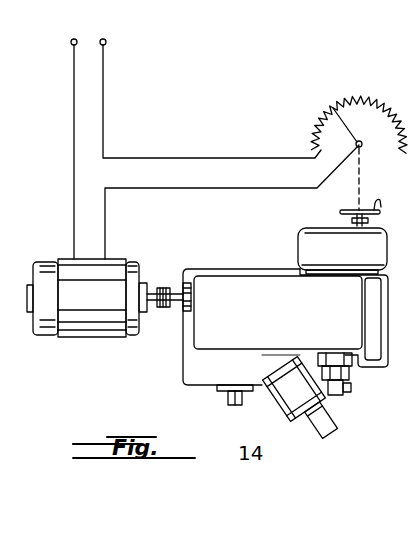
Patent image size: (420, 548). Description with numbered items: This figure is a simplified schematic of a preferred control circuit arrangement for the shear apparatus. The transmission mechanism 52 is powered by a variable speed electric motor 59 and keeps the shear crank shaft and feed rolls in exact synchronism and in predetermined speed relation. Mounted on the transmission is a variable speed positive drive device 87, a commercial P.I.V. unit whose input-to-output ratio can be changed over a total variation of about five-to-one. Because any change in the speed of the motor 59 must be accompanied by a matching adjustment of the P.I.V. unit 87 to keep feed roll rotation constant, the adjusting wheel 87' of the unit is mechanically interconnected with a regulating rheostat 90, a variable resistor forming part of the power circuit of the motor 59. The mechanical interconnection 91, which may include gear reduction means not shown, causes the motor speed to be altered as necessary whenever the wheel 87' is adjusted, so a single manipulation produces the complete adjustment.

The transmission mechanism 52 is at (283, 328).
The variable speed electric motor 59 is at (85, 337).
The variable speed positive drive device 87 is at (321, 243).
The adjusting wheel 87' is at (374, 205).
The regulating rheostat 90 is at (356, 100).
The mechanical interconnection 91 is at (358, 163).